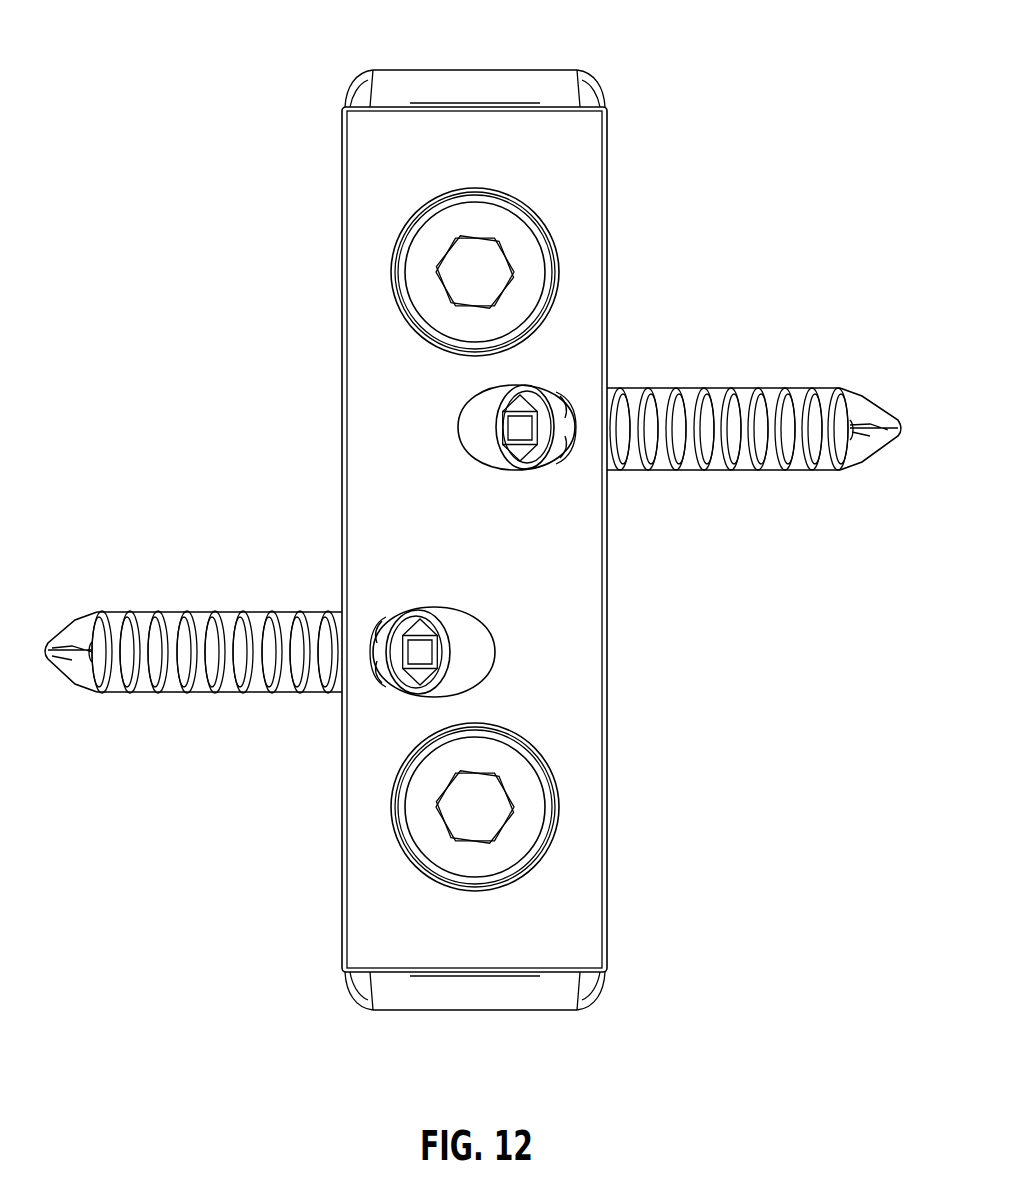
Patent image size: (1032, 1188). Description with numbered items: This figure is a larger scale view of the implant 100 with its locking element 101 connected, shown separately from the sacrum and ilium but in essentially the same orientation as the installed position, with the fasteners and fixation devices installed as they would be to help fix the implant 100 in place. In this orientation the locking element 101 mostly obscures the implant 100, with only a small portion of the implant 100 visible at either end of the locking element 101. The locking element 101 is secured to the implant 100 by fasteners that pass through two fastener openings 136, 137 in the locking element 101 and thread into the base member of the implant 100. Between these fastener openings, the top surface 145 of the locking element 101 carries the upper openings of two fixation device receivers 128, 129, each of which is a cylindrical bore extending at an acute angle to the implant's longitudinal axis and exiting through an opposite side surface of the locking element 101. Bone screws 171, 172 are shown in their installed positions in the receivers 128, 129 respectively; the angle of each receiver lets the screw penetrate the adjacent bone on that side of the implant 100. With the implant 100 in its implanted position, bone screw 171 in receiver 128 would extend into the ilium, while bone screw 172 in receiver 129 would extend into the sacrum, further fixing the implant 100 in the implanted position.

The implant 100 is at (592, 49).
The locking element 101 is at (281, 369).
The fixation device receiver 128 is at (562, 373).
The fixation device receiver 129 is at (397, 603).
The fastener opening 136 is at (545, 220).
The lower locking screw head 137 is at (542, 752).
The top surface 145 is at (503, 561).
The bone screw 171 is at (790, 387).
The bone screw 172 is at (217, 694).